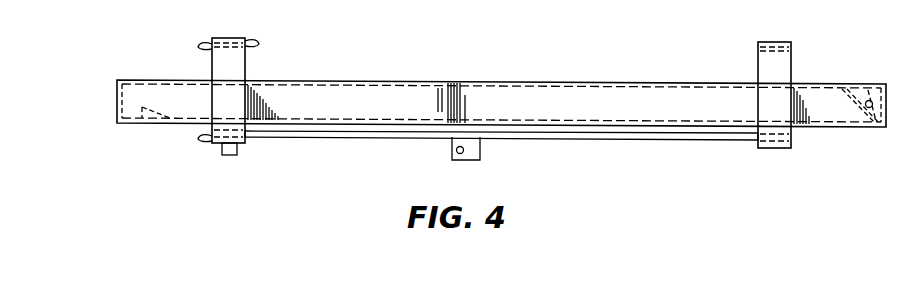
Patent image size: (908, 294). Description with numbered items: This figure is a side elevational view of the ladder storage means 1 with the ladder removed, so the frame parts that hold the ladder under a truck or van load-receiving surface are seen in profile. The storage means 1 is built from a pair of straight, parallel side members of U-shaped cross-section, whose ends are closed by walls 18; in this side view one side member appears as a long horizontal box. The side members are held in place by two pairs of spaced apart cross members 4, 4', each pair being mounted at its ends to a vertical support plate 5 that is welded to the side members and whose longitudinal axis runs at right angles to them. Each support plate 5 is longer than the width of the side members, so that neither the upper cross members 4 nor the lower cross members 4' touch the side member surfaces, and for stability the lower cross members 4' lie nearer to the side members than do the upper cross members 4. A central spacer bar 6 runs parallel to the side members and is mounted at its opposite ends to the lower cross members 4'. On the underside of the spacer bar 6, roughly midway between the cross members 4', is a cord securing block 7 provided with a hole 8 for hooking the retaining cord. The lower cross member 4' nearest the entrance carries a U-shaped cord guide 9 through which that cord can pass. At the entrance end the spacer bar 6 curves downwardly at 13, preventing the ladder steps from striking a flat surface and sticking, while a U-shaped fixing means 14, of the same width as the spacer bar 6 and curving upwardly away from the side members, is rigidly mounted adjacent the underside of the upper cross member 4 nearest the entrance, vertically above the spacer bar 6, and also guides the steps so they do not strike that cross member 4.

The ladder storage means 1 is at (463, 74).
The walls 18 is at (118, 92).
The upper cross members 4 is at (501, 84).
The lower cross members 4' is at (486, 157).
The vertical support plate 5 is at (228, 63).
The U-shaped fixing means 14 is at (204, 44).
The downwardly curved end of spacer bar 13 is at (205, 139).
The U-shaped cord guide 9 is at (228, 156).
The central spacer bar 6 is at (628, 141).
The cord securing block 7 is at (462, 160).
The hole 8 is at (456, 151).